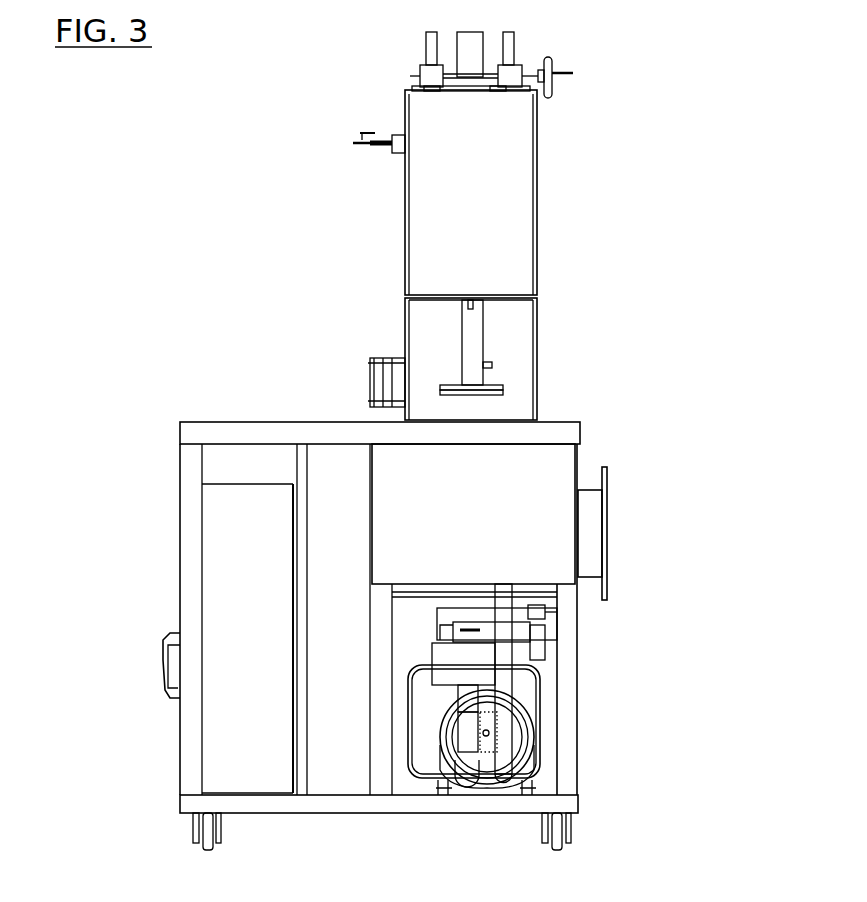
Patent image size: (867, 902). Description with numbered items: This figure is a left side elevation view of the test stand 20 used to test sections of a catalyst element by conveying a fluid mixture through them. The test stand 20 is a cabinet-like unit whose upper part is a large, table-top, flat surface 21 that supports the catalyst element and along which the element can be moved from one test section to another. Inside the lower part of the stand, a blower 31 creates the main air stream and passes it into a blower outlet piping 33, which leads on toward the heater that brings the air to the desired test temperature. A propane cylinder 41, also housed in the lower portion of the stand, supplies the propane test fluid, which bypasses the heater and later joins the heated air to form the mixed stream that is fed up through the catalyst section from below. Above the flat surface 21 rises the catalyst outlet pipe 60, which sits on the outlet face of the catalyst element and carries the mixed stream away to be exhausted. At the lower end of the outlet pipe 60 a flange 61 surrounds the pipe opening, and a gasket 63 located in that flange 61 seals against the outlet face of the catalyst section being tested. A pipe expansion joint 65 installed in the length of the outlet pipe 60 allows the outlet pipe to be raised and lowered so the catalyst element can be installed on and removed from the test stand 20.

The test stand 20 is at (182, 463).
The flat surface 21 is at (250, 422).
The catalyst outlet pipe 60 is at (483, 325).
The flange 61 is at (503, 392).
The gasket 63 is at (443, 385).
The pipe expansion joint 65 is at (492, 368).
The blower outlet piping 33 is at (513, 690).
The propane cylinder 41 is at (408, 713).
The blower 31 is at (442, 750).